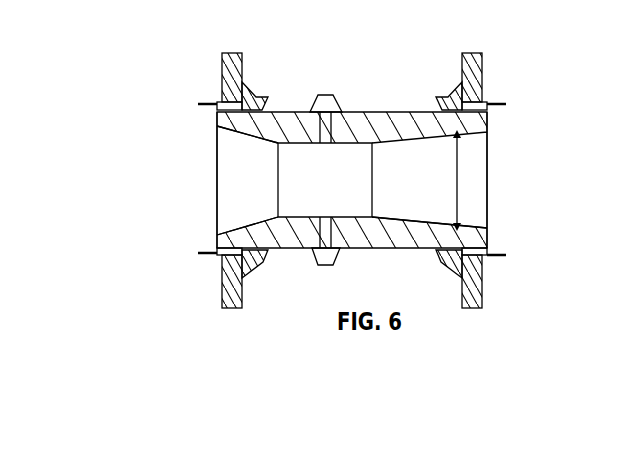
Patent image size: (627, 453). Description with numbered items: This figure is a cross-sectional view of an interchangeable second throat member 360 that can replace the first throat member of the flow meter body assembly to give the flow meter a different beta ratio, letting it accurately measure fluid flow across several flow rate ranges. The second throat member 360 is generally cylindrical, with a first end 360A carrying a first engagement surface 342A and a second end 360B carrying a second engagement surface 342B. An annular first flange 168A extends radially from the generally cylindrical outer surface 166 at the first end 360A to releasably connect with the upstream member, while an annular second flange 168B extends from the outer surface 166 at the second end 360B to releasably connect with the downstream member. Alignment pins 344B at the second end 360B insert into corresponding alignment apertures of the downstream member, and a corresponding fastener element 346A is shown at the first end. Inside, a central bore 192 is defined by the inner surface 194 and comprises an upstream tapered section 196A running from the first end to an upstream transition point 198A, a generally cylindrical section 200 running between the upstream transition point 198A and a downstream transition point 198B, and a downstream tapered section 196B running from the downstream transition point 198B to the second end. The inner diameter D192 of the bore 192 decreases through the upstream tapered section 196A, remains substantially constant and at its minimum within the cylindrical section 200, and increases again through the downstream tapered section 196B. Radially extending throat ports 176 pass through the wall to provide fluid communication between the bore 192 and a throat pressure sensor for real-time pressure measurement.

The outer surface 166 is at (428, 108).
The first flange 168A is at (233, 52).
The second flange 168B is at (472, 53).
The throat ports 176 is at (326, 120).
The central bore 192 is at (412, 202).
The inner diameter of bore D192 is at (458, 180).
The inner surface 194 is at (222, 127).
The upstream tapered section 196A is at (232, 185).
The downstream tapered section 196B is at (477, 198).
The upstream transition point 198A is at (276, 216).
The downstream transition point 198B is at (372, 216).
The cylindrical section 200 is at (338, 130).
The second throat member 360 is at (393, 125).
The first engagement surface 342A is at (217, 117).
The second engagement surface 342B is at (487, 123).
The second plurality of alignment pins 344B is at (498, 103).
The first fastener 346A is at (213, 102).
The first end 360A is at (172, 178).
The second end 360B is at (532, 178).